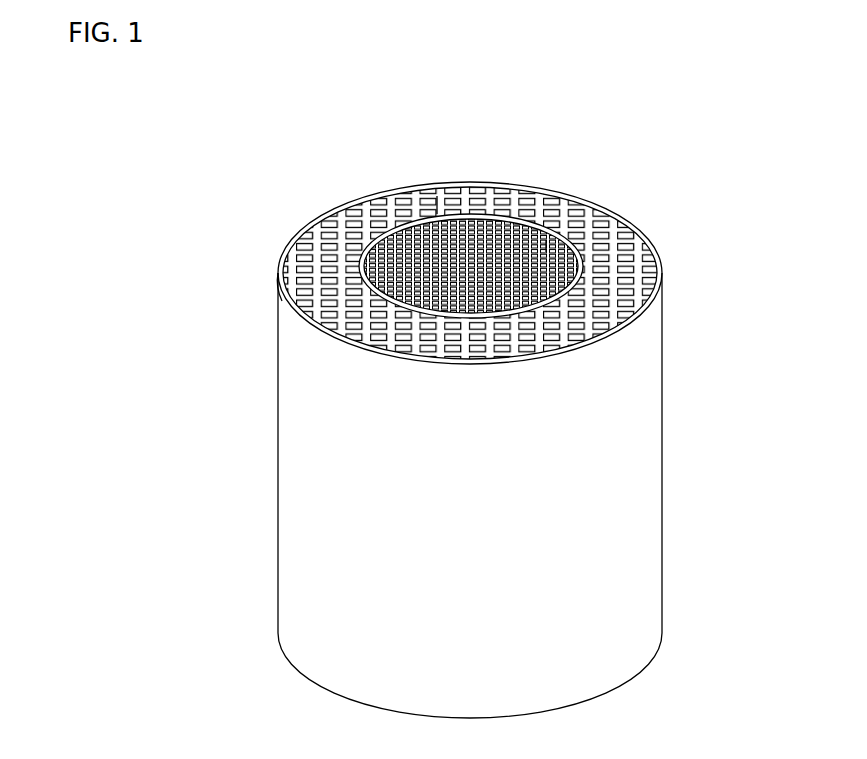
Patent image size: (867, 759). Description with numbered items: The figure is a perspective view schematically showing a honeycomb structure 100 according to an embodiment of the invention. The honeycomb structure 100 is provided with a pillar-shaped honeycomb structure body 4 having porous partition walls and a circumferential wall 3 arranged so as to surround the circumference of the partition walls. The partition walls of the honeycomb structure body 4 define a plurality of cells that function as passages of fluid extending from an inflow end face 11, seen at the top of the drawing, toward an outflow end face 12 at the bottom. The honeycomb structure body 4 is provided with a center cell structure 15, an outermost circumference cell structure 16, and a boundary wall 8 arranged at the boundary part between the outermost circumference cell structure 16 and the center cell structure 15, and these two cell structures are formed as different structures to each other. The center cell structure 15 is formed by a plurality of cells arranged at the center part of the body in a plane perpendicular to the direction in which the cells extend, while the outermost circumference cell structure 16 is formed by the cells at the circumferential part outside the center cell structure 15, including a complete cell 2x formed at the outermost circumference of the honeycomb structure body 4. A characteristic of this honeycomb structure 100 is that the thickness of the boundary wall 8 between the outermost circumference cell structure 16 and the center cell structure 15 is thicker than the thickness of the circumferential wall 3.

The honeycomb structure 100 is at (745, 105).
The complete cell 2x is at (280, 292).
The circumferential wall 3 is at (643, 337).
The honeycomb structure body 4 is at (668, 445).
The boundary wall 8 is at (663, 275).
The inflow end face 11 is at (322, 198).
The outflow end face 12 is at (290, 665).
The center cell structure 15 is at (382, 250).
The outermost circumference cell structure 16 is at (347, 280).